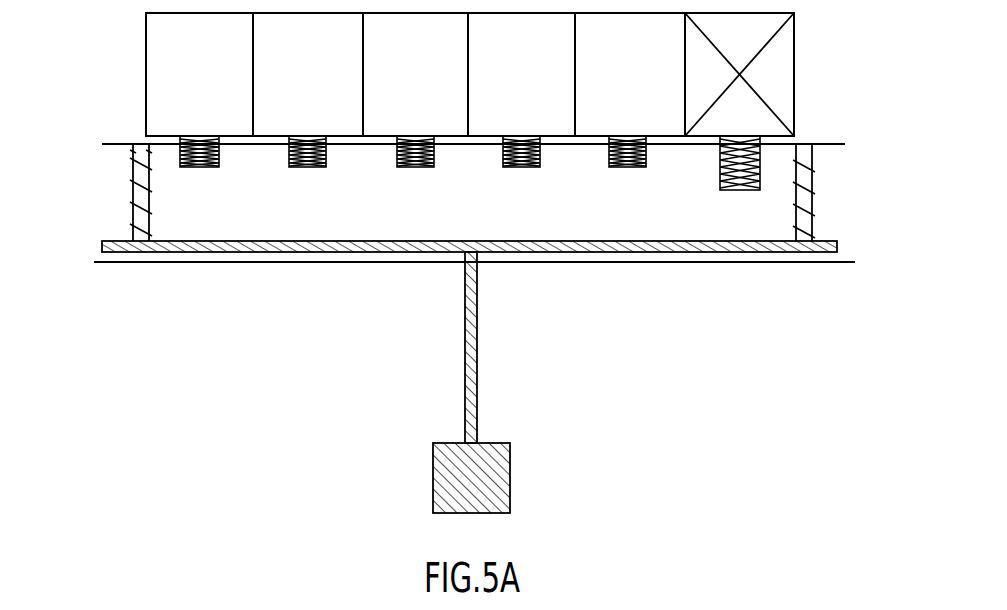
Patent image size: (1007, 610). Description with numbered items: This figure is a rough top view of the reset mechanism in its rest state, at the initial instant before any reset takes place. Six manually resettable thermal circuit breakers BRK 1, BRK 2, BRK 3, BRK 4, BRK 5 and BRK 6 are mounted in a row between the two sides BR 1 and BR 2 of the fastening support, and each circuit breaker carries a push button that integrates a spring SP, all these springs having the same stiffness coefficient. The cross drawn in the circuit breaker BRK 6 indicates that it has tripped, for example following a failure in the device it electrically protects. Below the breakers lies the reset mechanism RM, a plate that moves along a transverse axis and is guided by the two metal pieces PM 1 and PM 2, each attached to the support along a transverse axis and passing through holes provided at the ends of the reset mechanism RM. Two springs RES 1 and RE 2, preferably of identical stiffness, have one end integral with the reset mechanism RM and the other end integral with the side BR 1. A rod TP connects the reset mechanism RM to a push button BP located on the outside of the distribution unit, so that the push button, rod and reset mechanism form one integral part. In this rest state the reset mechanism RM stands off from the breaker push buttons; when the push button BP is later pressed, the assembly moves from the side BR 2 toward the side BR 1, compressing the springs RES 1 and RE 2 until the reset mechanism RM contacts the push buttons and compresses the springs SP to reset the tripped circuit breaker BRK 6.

The circuit breaker BRK 1 is at (199, 74).
The circuit breaker BRK 2 is at (308, 74).
The circuit breaker BRK 3 is at (415, 74).
The circuit breaker BRK 4 is at (521, 74).
The circuit breaker BRK 5 is at (630, 74).
The circuit breaker BRK 6 is at (739, 74).
The spring SP is at (307, 167).
The side of the fastening support BR 1 is at (836, 144).
The side of the fastening support BR 2 is at (768, 263).
The spring RES 1 is at (127, 183).
The spring RE 2 is at (813, 200).
The metal piece PM 1 is at (137, 227).
The metal piece PM 2 is at (813, 186).
The reset mechanism RM is at (837, 248).
The rod TP is at (477, 377).
The push button BP is at (510, 473).